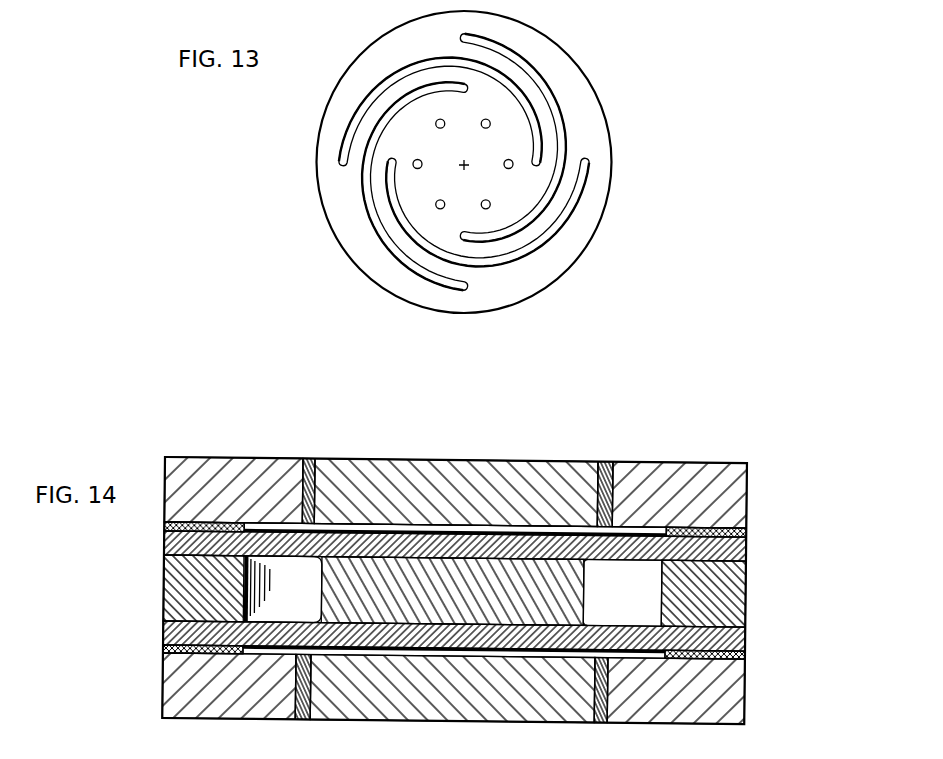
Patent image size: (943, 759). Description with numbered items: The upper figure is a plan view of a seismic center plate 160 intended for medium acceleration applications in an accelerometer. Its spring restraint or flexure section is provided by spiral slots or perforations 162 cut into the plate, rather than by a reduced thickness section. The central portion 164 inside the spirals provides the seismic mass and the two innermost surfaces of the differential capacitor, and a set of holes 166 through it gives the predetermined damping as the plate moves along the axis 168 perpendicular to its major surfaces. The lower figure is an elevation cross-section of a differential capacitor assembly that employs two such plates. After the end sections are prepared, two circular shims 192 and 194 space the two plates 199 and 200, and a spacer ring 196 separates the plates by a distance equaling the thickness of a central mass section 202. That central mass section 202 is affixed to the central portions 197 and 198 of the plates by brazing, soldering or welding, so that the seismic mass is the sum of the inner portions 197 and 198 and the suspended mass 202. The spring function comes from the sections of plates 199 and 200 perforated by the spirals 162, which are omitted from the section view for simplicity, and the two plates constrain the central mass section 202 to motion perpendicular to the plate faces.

In FIG. 13, the plate 160 is at (603, 120).
In FIG. 13, the spiral slots 162 is at (445, 62).
In FIG. 13, the central portion 164 is at (458, 191).
In FIG. 13, the holes 166 is at (489, 127).
In FIG. 13, the axis 168 is at (463, 164).
In FIG. 14, the circular shim 192 is at (747, 655).
In FIG. 14, the circular shim 194 is at (747, 535).
In FIG. 14, the spacer ring 196 is at (747, 592).
In FIG. 14, the central portion of plate 197 is at (410, 637).
In FIG. 14, the central portion of plate 198 is at (440, 547).
In FIG. 14, the plate 199 is at (747, 638).
In FIG. 14, the plate 200 is at (747, 555).
In FIG. 14, the central mass section 202 is at (588, 593).